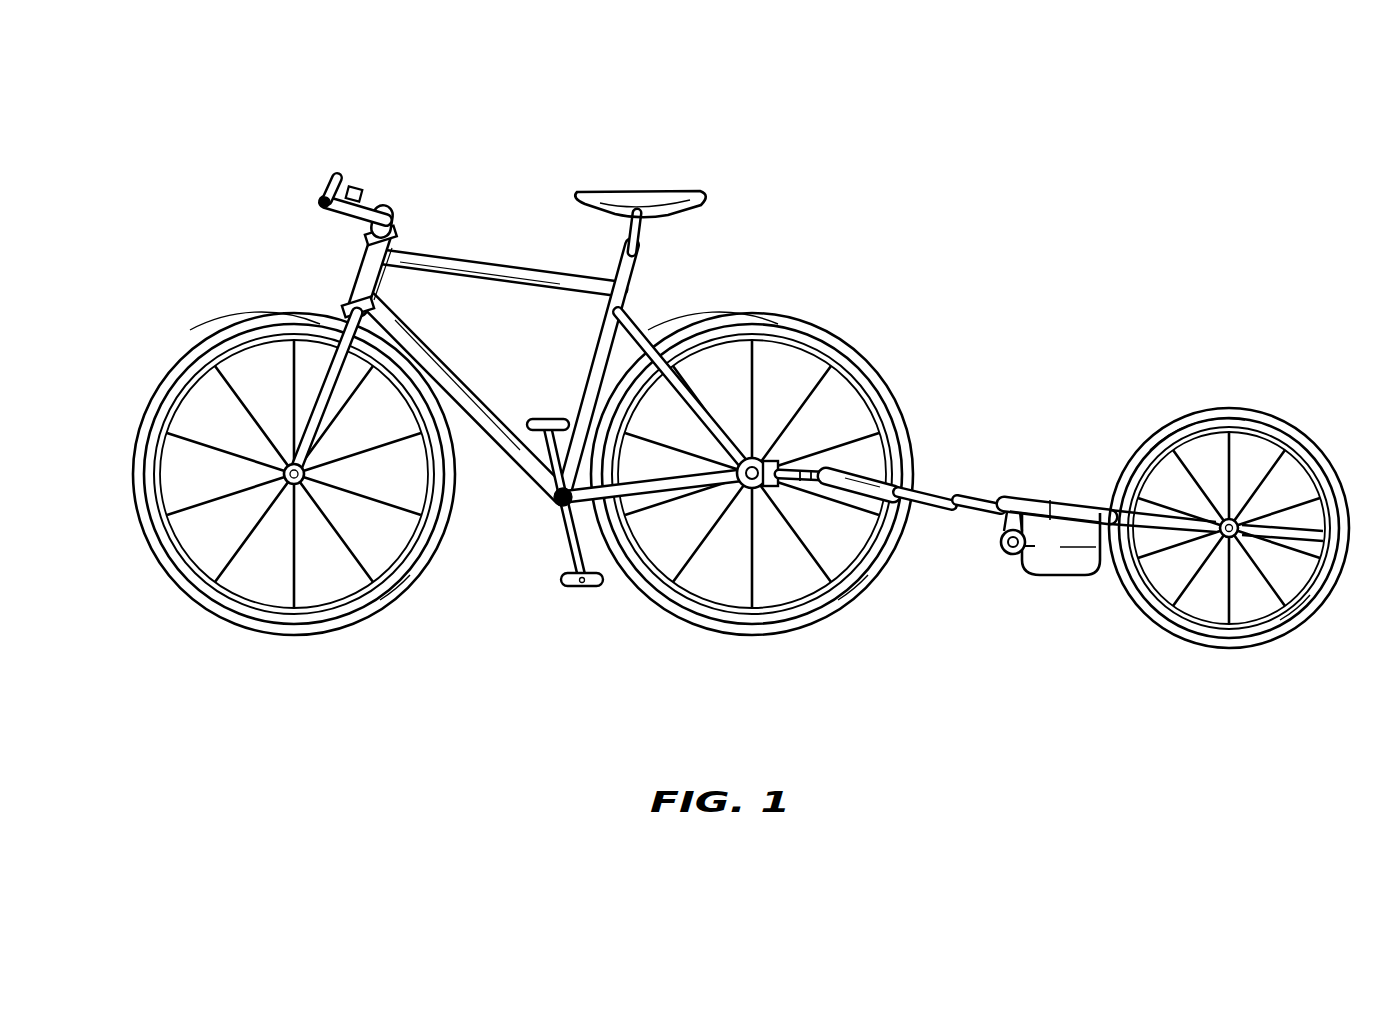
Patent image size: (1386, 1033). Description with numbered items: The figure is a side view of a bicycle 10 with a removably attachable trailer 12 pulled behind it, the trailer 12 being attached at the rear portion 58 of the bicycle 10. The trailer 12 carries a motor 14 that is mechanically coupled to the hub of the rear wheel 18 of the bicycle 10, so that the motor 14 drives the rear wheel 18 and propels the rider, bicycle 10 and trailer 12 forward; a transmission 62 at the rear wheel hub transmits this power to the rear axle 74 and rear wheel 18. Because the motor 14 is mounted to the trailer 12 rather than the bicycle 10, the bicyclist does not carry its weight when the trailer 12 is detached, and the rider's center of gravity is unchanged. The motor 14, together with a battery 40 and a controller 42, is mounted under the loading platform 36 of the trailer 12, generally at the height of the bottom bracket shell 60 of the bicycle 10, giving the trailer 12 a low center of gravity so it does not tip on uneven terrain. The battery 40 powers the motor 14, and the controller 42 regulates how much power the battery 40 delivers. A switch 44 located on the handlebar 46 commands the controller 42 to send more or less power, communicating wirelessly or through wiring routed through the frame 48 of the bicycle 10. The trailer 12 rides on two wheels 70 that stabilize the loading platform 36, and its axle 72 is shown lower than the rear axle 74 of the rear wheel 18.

The bicycle 10 is at (917, 124).
The trailer 12 is at (1352, 70).
The motor 14 is at (1032, 573).
The rear wheel 18 is at (917, 337).
The loading platform 36 is at (1062, 498).
The battery 40 is at (1158, 532).
The controller 42 is at (1216, 525).
The switch 44 is at (358, 190).
The handlebar 46 is at (320, 190).
The frame 48 is at (496, 262).
The rear portion 58 is at (790, 301).
The bottom bracket shell 60 is at (560, 500).
The transmission 62 is at (797, 503).
The wheels 70 is at (1227, 406).
The axle 72 is at (1243, 482).
The rear axle 74 is at (765, 465).